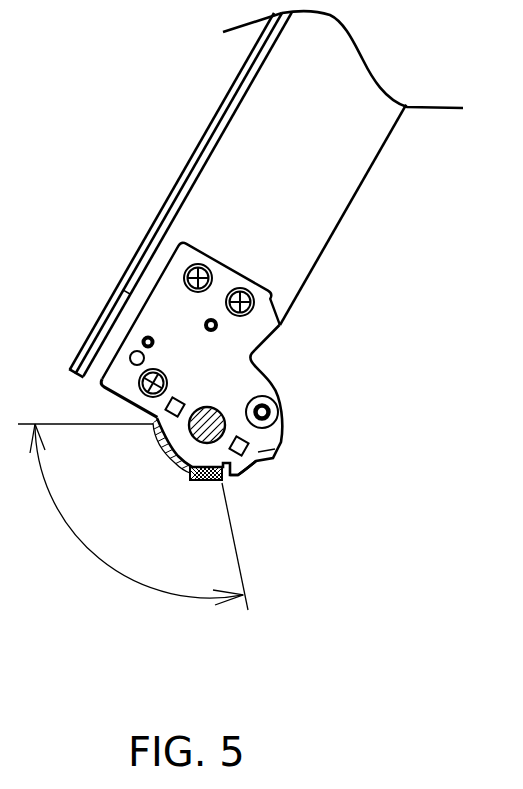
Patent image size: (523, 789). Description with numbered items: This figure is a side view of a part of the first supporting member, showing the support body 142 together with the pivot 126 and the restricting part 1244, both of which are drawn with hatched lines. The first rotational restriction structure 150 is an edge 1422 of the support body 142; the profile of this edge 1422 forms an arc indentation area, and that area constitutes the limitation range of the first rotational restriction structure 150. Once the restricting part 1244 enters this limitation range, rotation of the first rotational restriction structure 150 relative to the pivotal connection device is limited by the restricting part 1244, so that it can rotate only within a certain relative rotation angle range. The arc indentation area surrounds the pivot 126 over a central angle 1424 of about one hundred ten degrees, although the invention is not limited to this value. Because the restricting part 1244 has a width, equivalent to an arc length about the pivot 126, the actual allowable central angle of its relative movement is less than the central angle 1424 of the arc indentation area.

The support body 142 is at (328, 188).
The pivot 126 is at (220, 410).
The first rotational restriction structure 150 is at (160, 453).
The restricting part 1244 is at (195, 481).
The edge 1422 is at (238, 478).
The central angle 1424 is at (133, 517).